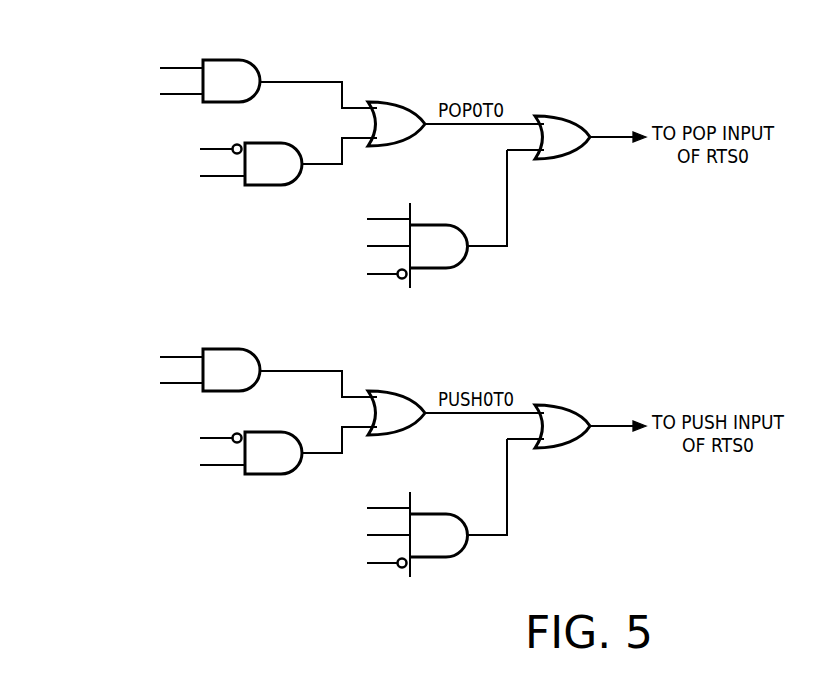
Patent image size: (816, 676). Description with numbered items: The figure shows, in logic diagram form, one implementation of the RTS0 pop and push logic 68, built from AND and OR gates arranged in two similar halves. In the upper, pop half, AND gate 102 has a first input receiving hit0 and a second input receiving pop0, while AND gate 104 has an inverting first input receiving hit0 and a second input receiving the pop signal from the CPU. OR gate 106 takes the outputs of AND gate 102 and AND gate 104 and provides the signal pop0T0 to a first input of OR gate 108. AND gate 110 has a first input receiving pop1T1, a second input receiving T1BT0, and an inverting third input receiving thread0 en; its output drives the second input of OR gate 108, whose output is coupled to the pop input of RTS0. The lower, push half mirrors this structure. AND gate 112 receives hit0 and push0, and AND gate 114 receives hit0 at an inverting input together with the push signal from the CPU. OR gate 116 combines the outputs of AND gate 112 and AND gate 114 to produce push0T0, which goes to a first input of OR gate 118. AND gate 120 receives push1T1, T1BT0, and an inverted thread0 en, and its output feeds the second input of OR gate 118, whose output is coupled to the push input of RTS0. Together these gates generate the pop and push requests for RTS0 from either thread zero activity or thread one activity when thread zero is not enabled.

The AND gate 102 is at (223, 60).
The AND gate 104 is at (269, 143).
The OR gate 106 is at (385, 102).
The OR gate 108 is at (550, 116).
The AND gate 110 is at (428, 225).
The AND gate 112 is at (223, 349).
The AND gate 114 is at (269, 432).
The OR gate 116 is at (385, 391).
The OR gate 118 is at (550, 405).
The AND gate 120 is at (428, 514).
The RTS0 pop and push logic 68 is at (603, 577).